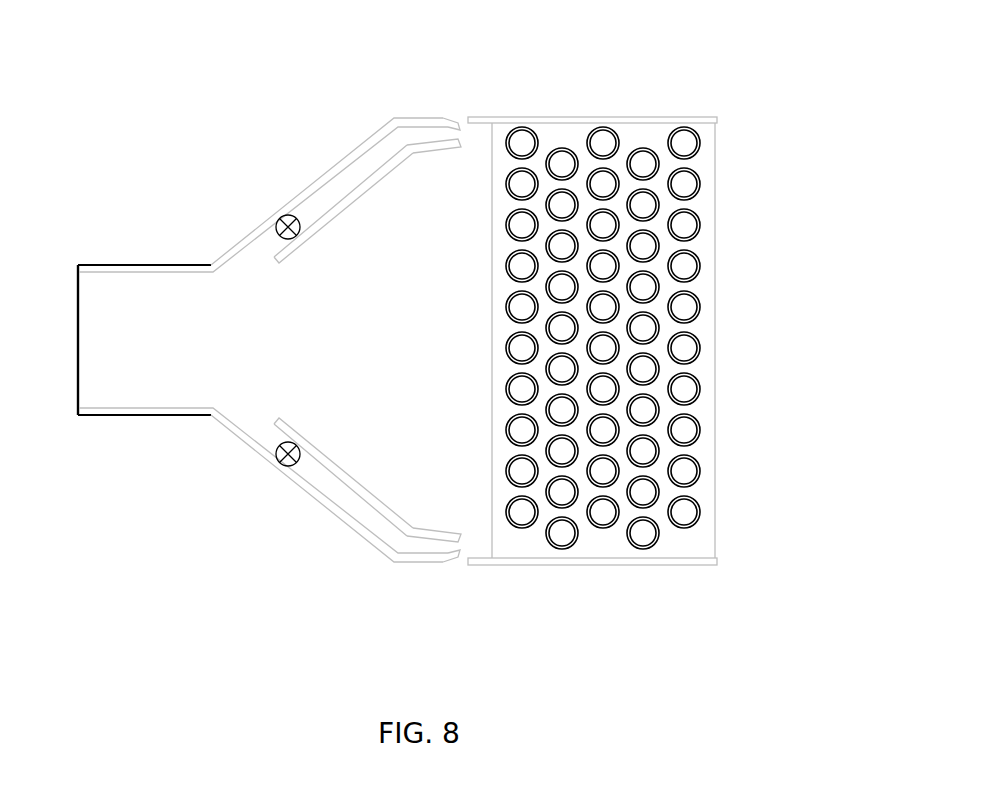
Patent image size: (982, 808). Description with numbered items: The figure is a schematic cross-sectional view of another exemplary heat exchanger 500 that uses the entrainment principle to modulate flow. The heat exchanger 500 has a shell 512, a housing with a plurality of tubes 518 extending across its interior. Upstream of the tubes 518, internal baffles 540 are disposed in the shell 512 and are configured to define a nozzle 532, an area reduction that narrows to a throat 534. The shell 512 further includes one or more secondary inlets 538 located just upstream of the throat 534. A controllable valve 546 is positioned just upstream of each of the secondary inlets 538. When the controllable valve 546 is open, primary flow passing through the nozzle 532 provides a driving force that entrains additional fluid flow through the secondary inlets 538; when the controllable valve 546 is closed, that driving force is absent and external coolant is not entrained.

The heat exchanger 500 is at (470, 31).
The shell 512 is at (660, 115).
The tubes 518 is at (701, 180).
The nozzle 532 is at (410, 170).
The throat 534 is at (461, 141).
The secondary inlets 538 is at (447, 119).
The internal baffles 540 is at (327, 222).
The controllable valve 546 is at (278, 234).